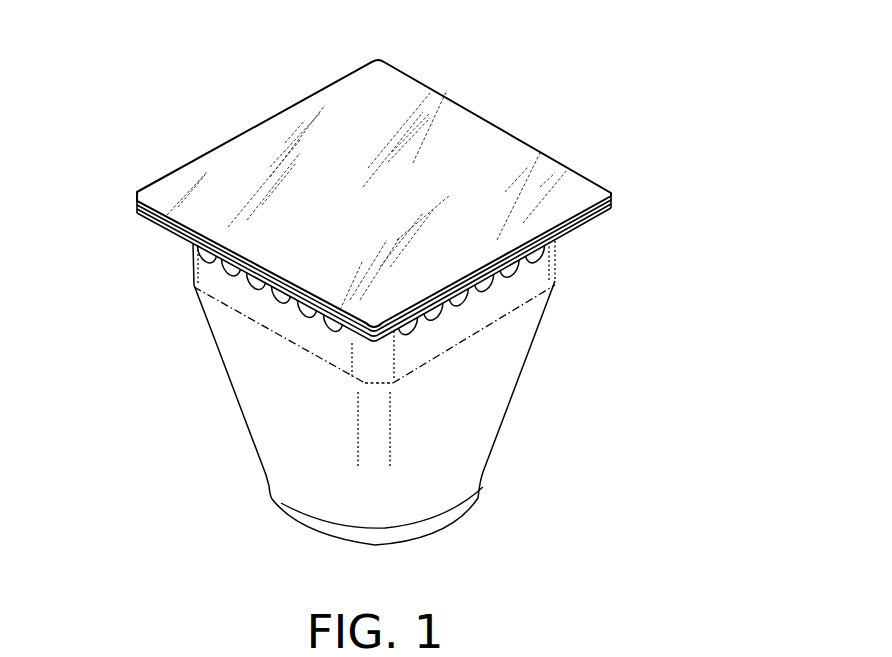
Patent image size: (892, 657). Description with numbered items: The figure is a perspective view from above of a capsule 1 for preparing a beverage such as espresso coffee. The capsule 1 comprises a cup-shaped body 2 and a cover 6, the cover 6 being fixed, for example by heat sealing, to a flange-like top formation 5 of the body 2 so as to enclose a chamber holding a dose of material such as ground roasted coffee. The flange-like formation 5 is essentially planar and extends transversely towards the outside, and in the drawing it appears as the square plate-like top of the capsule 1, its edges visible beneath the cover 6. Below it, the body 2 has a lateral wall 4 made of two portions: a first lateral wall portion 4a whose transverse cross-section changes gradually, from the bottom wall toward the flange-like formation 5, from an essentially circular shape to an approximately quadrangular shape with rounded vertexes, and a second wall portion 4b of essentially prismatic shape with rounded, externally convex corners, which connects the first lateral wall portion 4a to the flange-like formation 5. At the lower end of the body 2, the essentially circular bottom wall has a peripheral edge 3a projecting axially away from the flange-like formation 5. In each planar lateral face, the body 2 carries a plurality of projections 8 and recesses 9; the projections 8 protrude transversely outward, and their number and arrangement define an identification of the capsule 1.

The capsule 1 is at (531, 119).
The cup-shaped body 2 is at (531, 420).
The peripheral edge 3a is at (452, 520).
The lateral wall 4 is at (500, 445).
The first lateral wall portion 4a is at (248, 443).
The second wall portion 4b is at (188, 268).
The flange-like top formation 5 is at (137, 213).
The cover 6 is at (283, 130).
The projections 8 is at (192, 249).
The recesses 9 is at (196, 281).